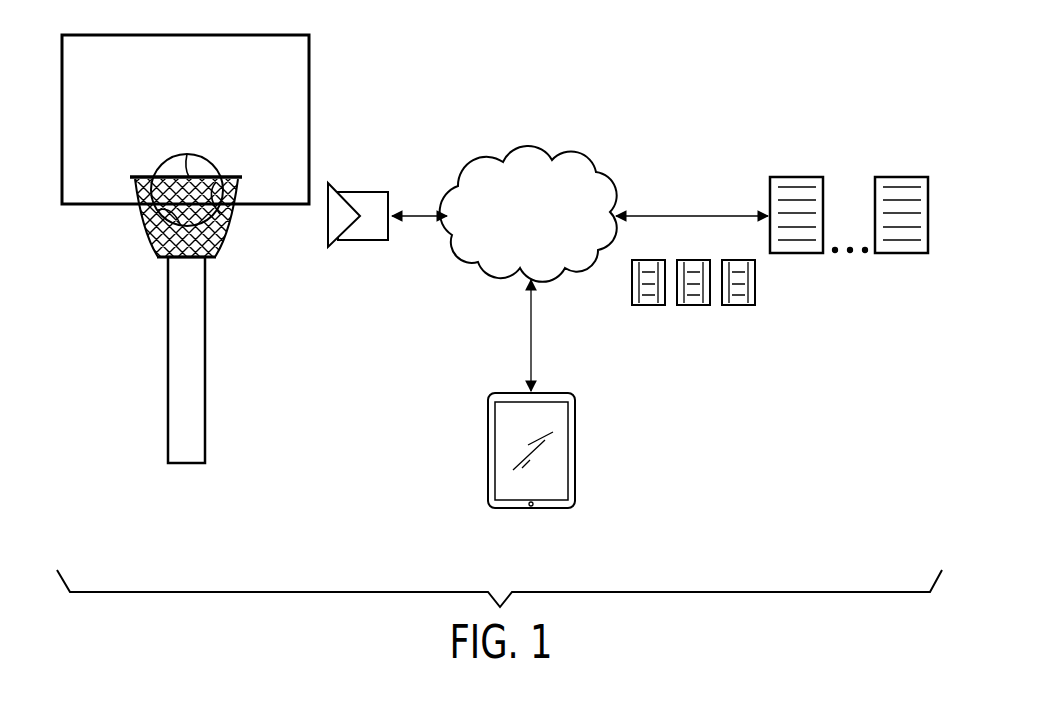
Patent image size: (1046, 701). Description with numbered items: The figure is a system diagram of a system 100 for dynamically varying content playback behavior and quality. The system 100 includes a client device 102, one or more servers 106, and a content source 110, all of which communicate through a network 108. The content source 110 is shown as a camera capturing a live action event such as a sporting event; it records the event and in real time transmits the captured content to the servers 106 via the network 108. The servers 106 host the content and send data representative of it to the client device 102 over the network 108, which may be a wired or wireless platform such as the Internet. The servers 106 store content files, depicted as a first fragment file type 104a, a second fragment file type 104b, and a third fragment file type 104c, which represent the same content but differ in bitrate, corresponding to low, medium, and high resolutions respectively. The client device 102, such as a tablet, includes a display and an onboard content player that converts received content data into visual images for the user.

The system 100 is at (582, 71).
The client device 102 is at (575, 422).
The first fragment file type 104a is at (648, 305).
The second fragment file type 104b is at (694, 260).
The third fragment file type 104c is at (738, 305).
The servers 106 is at (795, 253).
The network 108 is at (510, 243).
The content source 110 is at (362, 240).